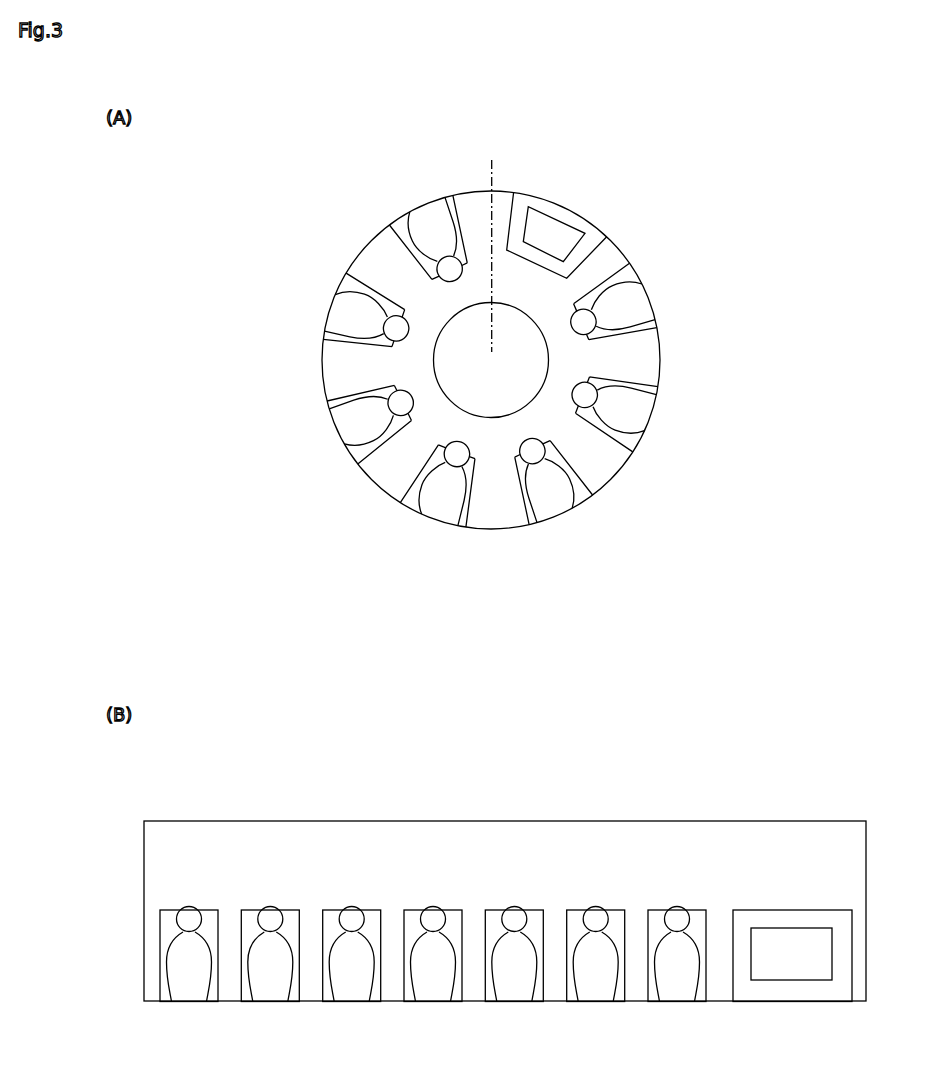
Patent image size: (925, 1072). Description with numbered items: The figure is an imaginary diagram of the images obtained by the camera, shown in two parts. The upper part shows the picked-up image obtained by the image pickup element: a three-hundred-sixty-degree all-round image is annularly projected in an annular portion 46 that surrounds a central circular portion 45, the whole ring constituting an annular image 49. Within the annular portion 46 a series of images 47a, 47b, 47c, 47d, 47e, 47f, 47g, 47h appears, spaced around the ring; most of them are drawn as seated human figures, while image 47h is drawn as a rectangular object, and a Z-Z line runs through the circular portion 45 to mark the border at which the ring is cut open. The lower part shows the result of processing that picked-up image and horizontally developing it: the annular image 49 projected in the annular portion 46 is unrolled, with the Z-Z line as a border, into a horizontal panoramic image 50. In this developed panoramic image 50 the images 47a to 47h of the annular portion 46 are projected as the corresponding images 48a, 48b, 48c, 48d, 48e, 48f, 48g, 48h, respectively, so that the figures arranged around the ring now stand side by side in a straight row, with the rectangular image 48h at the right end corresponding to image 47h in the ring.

The circular portion 45 is at (505, 330).
The annular portion 46 is at (609, 462).
The image 47a is at (432, 217).
The image 47b is at (340, 301).
The image 47c is at (345, 425).
The image 47d is at (433, 503).
The image 47e is at (558, 503).
The image 47f is at (637, 418).
The image 47g is at (632, 292).
The image 47h is at (572, 240).
The annular image 49 is at (645, 357).
The panoramic image 50 is at (712, 834).
The image 48a is at (187, 983).
The image 48b is at (268, 983).
The image 48c is at (350, 983).
The image 48d is at (431, 983).
The image 48e is at (512, 983).
The image 48f is at (594, 983).
The image 48g is at (675, 983).
The image 48h is at (793, 963).